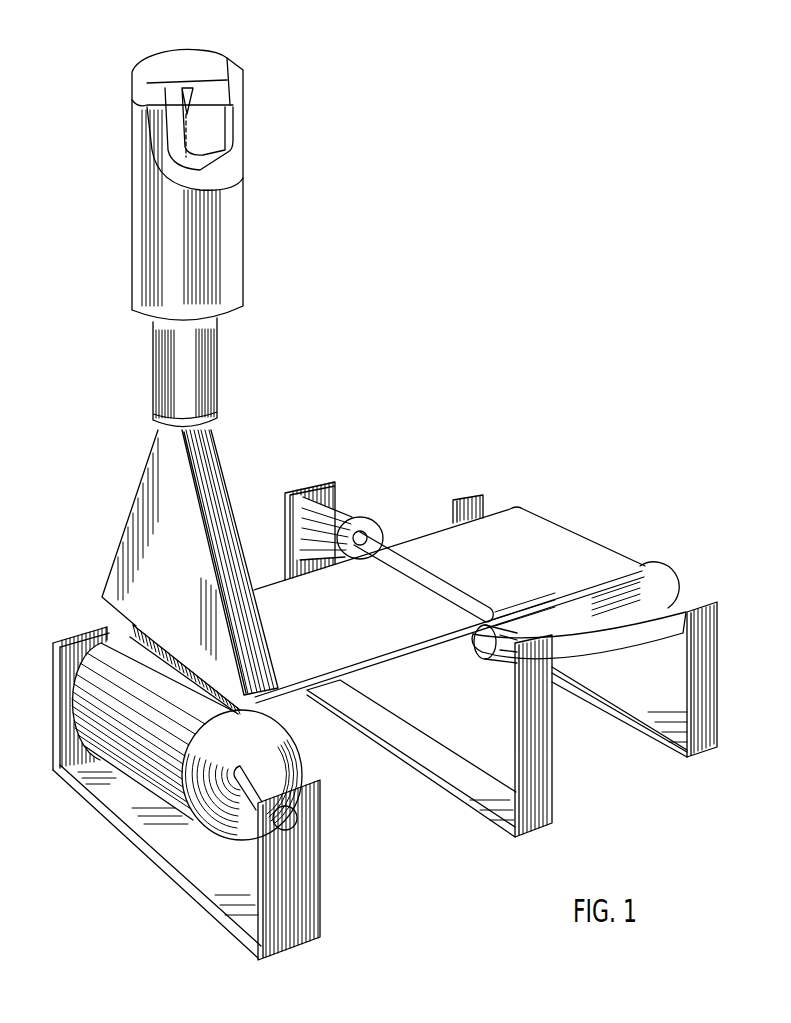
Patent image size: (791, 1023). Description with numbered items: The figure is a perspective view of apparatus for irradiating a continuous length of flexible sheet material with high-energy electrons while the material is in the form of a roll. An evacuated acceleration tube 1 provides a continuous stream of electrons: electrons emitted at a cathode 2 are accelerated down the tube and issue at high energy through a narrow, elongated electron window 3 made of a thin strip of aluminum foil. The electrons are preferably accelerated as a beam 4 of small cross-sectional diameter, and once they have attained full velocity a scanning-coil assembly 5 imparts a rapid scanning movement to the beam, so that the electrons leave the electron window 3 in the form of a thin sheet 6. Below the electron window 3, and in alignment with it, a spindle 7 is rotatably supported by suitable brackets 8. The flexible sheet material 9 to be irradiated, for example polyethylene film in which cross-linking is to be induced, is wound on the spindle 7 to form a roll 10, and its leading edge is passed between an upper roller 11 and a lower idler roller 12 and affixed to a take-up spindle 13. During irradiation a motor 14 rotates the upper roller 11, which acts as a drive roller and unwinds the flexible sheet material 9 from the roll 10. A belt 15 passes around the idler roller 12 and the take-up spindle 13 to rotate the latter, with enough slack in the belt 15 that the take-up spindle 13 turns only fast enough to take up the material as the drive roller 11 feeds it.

The evacuated acceleration tube 1 is at (223, 425).
The cathode 2 is at (228, 107).
The electron window 3 is at (123, 607).
The beam 4 is at (187, 157).
The scanning-coil assembly 5 is at (153, 373).
The thin sheet 6 is at (247, 706).
The spindle 7 is at (257, 806).
The brackets 8 is at (64, 710).
The flexible sheet material 9 is at (416, 651).
The roll 10 is at (193, 828).
The upper roller 11 is at (487, 618).
The idler roller 12 is at (483, 646).
The take-up spindle 13 is at (677, 628).
The motor 14 is at (362, 512).
The belt 15 is at (580, 668).